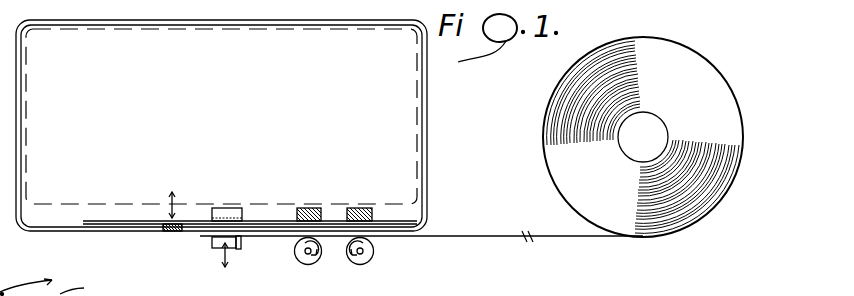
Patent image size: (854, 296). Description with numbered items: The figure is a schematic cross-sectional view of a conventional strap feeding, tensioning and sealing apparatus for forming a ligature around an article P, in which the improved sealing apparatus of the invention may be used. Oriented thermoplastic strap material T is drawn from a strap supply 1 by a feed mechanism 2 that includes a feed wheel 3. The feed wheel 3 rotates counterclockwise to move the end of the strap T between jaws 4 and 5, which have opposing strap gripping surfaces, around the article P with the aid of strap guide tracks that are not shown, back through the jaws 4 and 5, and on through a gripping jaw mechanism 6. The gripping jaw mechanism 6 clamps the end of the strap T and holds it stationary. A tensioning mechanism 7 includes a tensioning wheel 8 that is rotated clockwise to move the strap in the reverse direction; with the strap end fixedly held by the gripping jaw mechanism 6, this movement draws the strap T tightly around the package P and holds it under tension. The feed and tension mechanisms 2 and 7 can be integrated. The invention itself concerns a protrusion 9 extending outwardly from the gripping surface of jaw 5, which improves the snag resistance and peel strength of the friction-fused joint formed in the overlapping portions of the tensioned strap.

The strap supply 1 is at (698, 217).
The feed mechanism 2 is at (362, 266).
The feed wheel 3 is at (378, 255).
The jaw 4 is at (227, 208).
The jaw 5 is at (212, 242).
The gripping jaw mechanism 6 is at (165, 223).
The tensioning mechanism 7 is at (312, 265).
The tensioning wheel 8 is at (298, 263).
The protrusion 9 is at (243, 241).
The article P is at (426, 108).
The strap material T is at (466, 238).